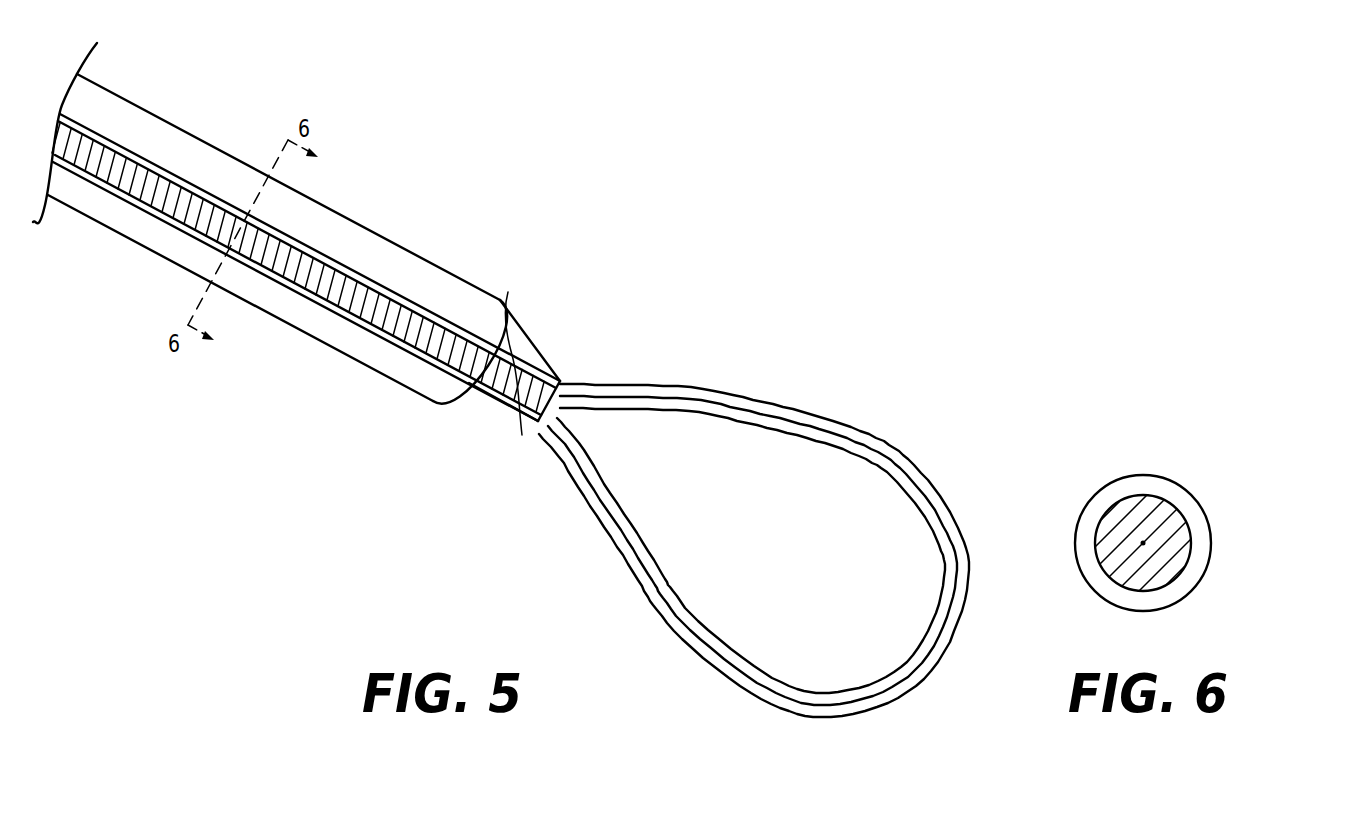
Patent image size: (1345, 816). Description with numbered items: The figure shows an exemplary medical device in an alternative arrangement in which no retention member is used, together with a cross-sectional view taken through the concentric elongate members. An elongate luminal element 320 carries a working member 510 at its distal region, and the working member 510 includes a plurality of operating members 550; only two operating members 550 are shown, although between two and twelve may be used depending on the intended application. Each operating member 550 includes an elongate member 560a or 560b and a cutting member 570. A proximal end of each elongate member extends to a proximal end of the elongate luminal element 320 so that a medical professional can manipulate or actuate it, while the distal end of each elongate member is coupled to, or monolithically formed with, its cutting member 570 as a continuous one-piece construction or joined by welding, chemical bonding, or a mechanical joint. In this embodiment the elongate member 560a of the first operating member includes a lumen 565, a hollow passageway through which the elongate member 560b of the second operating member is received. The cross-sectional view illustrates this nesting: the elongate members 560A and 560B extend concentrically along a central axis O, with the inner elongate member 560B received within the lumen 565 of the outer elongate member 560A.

In FIG. 5, the elongate luminal element 320 is at (270, 223).
In FIG. 5, the elongate member 560a is at (310, 247).
In FIG. 5, the elongate member 560b is at (304, 268).
In FIG. 5, the lumen 565 is at (296, 291).
In FIG. 6, the lumen 565 is at (1186, 543).
In FIG. 5, the working member 510 is at (528, 352).
In FIG. 5, the operating member 550 is at (485, 387).
In FIG. 5, the cutting member 570 is at (755, 567).
In FIG. 6, the elongate member 560A is at (1164, 495).
In FIG. 6, the elongate member 560B is at (1187, 543).
In FIG. 6, the central axis O is at (1163, 590).